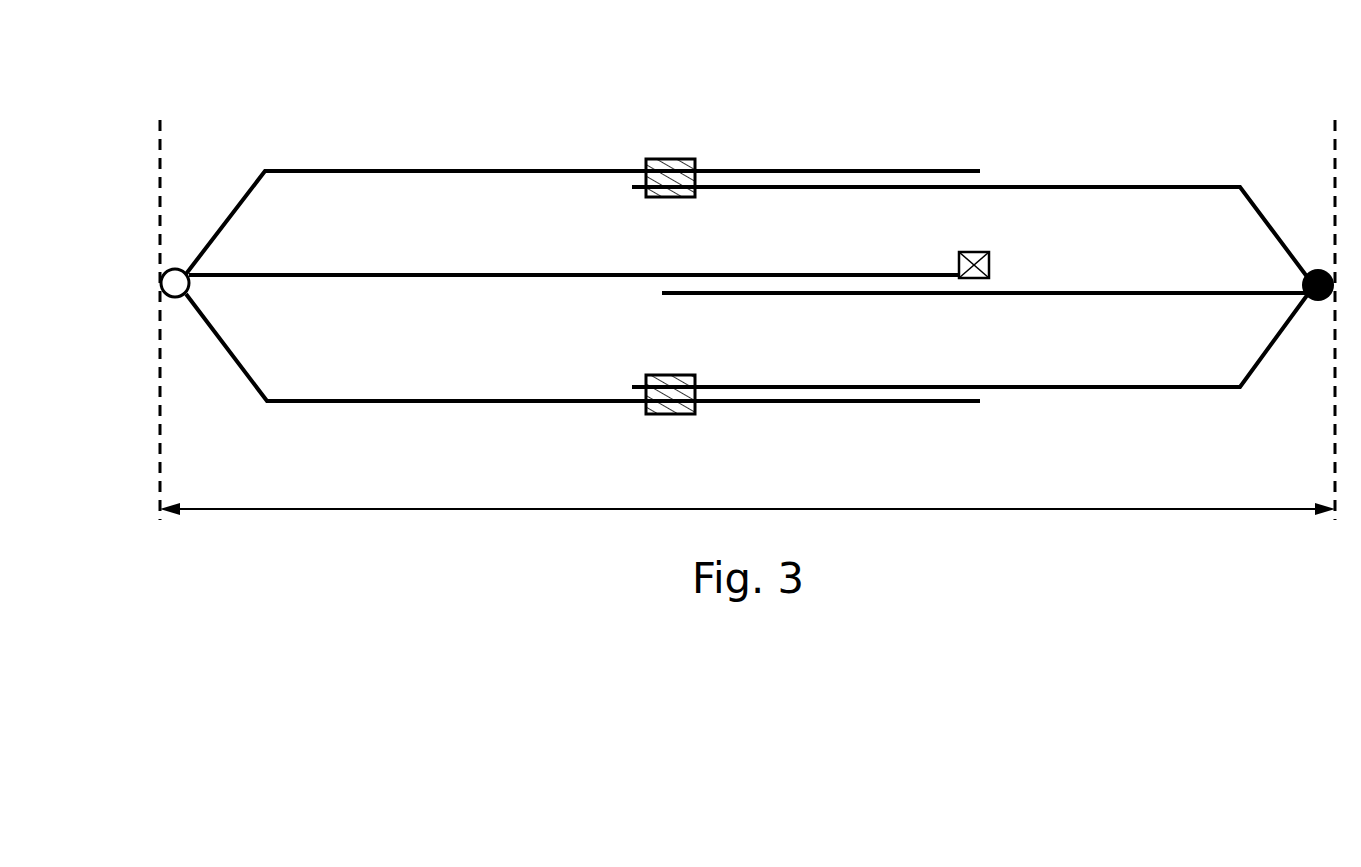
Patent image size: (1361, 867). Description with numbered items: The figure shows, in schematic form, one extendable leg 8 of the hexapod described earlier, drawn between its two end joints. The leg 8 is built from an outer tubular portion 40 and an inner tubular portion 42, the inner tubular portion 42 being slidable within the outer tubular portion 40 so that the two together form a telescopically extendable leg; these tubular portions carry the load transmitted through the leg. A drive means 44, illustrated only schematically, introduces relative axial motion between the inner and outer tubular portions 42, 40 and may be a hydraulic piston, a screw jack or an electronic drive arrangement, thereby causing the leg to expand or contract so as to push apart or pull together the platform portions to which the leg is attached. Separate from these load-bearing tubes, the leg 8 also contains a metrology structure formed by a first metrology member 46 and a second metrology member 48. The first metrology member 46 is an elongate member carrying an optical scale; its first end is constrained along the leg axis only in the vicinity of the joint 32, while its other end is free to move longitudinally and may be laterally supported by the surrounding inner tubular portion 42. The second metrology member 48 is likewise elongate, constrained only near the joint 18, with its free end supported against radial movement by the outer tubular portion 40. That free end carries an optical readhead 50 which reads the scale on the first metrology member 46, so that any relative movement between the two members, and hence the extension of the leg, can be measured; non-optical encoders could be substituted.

The extendable leg 8 is at (918, 102).
The joint 18 is at (175, 283).
The joint 32 is at (1318, 295).
The outer tubular portion 40 is at (452, 171).
The inner tubular portion 42 is at (1045, 186).
The drive means 44 is at (672, 159).
The first metrology member 46 is at (1072, 294).
The second metrology member 48 is at (325, 272).
The optical readhead 50 is at (990, 265).